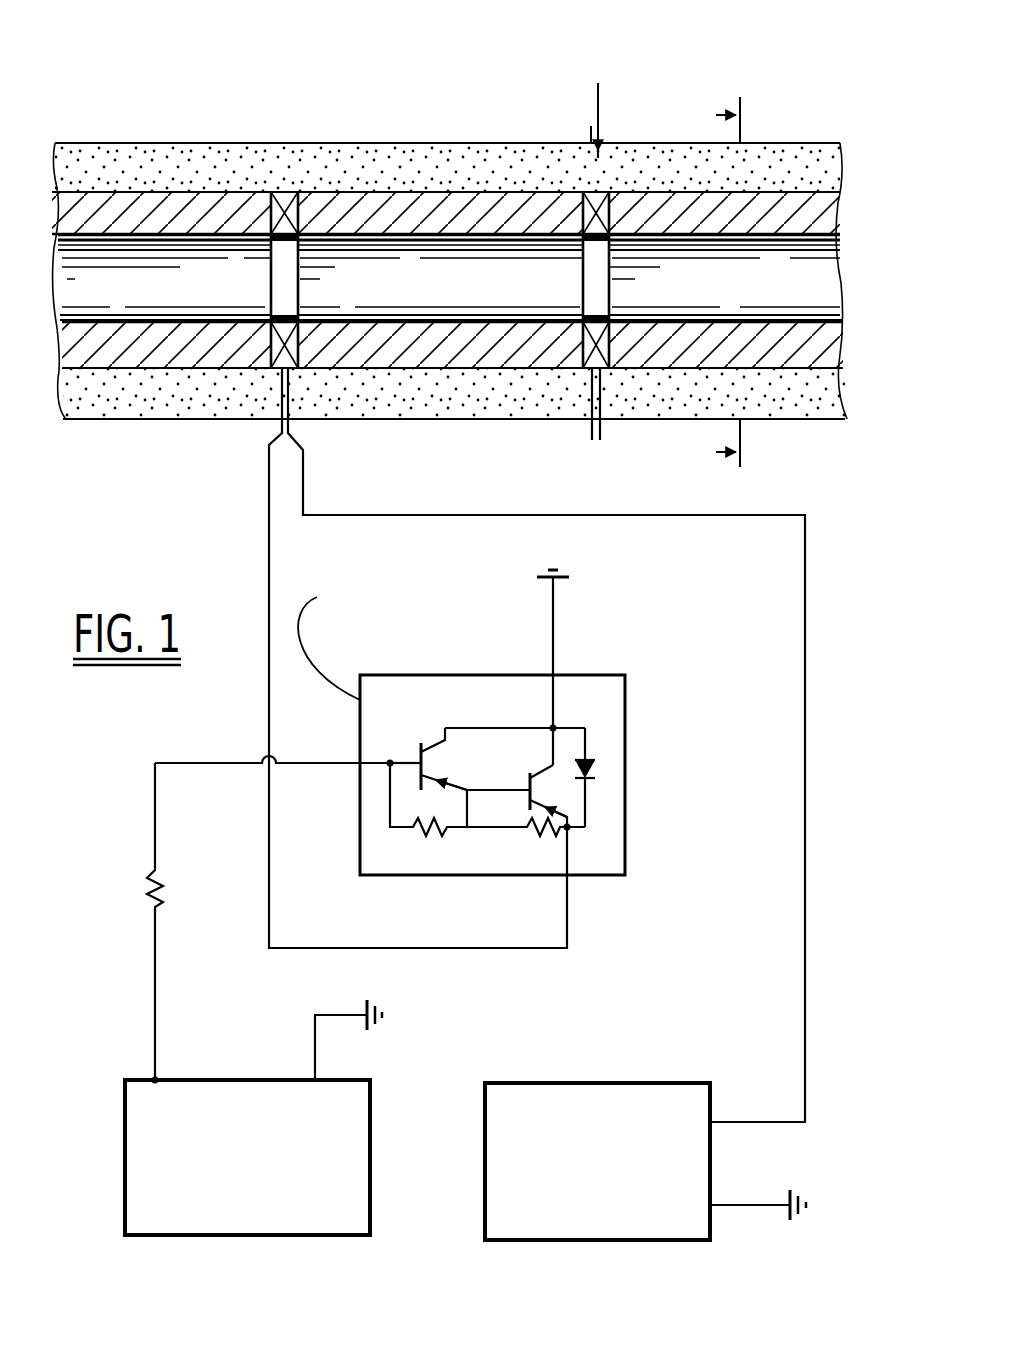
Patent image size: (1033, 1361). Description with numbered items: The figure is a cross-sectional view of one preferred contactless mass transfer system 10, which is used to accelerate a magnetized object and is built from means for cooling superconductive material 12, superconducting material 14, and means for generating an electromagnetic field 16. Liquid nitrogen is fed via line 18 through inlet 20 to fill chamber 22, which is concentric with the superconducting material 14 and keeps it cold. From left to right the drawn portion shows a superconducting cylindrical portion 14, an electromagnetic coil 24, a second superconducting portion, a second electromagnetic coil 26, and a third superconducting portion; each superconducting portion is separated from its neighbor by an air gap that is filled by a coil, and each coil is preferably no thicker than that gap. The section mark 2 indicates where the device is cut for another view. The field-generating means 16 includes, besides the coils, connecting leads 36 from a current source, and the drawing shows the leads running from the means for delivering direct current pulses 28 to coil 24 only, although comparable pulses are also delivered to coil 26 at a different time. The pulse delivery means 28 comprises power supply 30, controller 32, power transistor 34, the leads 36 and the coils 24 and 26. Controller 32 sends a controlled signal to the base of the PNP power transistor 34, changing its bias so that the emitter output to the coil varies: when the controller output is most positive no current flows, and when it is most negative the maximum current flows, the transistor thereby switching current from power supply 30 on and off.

The section line 2- 2 is at (741, 283).
The contactless mass transfer system 10 is at (508, 57).
The means for cooling superconductive material 12 is at (273, 158).
The superconducting material 14 is at (206, 200).
The means for generating an electromagnetic field 16 is at (592, 194).
The line 18 is at (599, 100).
The inlet 20 is at (599, 140).
The chamber 22 is at (785, 155).
The electromagnetic coil 24 is at (284, 194).
The second electromagnetic coil 26 is at (598, 192).
The means for delivering direct current pulses 28 is at (832, 665).
The power supply 30 is at (712, 1222).
The controller 32 is at (370, 1222).
The power transistor 34 is at (625, 732).
The leads 36 is at (280, 427).